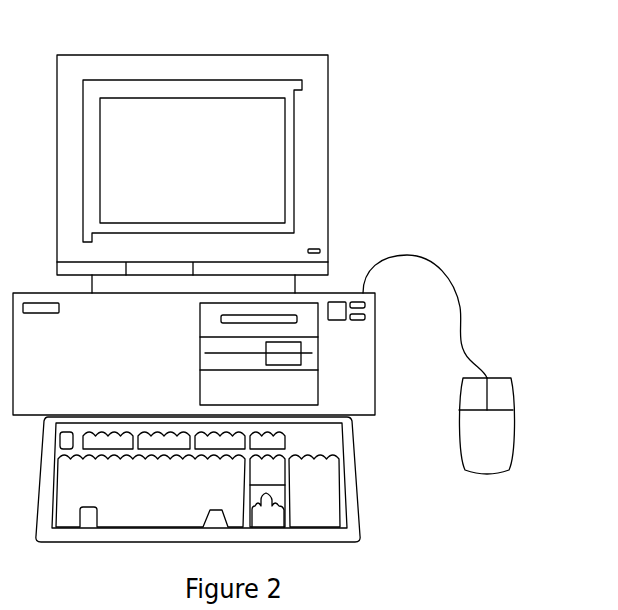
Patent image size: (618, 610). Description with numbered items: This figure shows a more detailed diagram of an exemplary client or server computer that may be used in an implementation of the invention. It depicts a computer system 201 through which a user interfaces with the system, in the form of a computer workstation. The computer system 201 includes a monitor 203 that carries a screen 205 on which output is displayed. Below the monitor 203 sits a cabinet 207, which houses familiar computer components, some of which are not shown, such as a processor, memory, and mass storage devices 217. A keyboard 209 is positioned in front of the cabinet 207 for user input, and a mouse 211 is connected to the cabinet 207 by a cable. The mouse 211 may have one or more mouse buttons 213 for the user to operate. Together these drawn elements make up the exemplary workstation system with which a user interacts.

The computer system 201 is at (350, 36).
The monitor 203 is at (328, 148).
The screen 205 is at (217, 160).
The cabinet 207 is at (108, 351).
The keyboard 209 is at (180, 500).
The mouse 211 is at (503, 448).
The mouse buttons 213 is at (499, 380).
The mass storage devices 217 is at (308, 310).